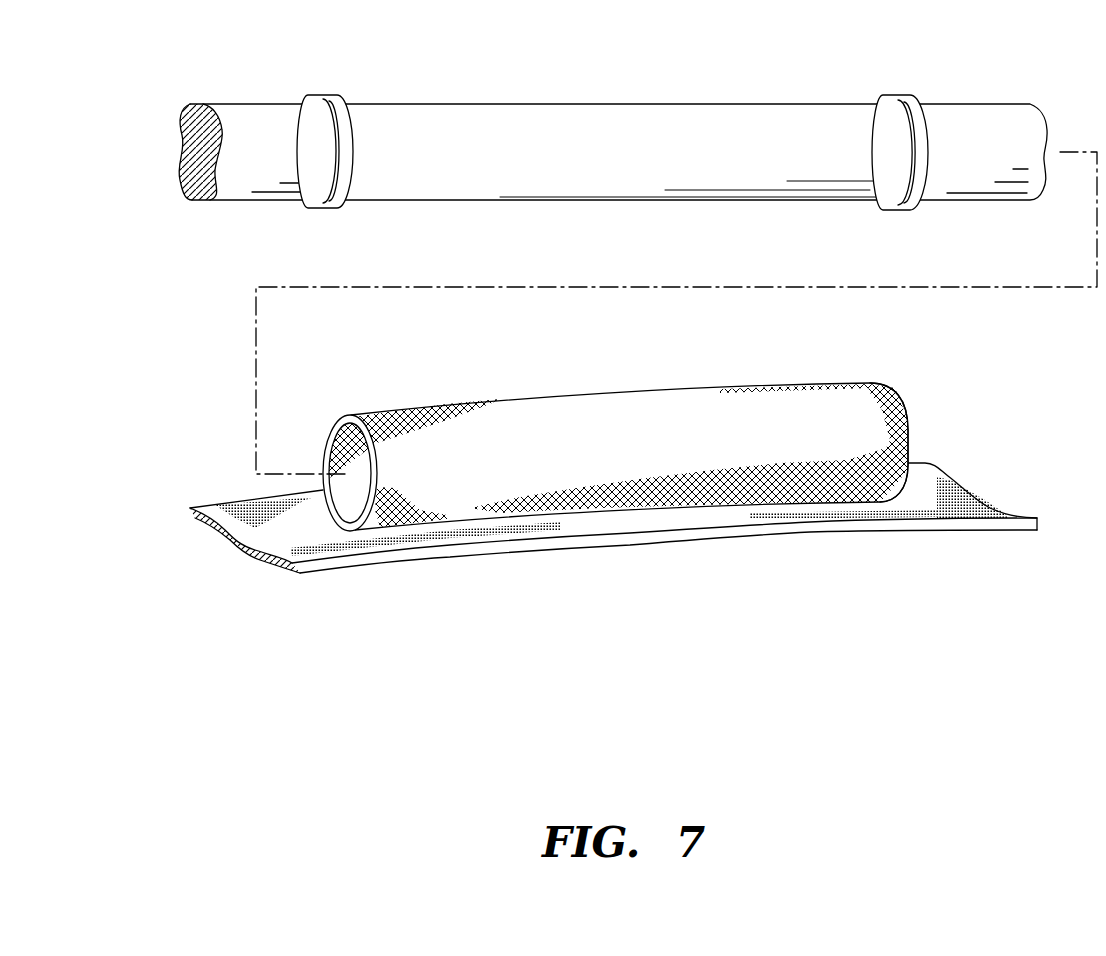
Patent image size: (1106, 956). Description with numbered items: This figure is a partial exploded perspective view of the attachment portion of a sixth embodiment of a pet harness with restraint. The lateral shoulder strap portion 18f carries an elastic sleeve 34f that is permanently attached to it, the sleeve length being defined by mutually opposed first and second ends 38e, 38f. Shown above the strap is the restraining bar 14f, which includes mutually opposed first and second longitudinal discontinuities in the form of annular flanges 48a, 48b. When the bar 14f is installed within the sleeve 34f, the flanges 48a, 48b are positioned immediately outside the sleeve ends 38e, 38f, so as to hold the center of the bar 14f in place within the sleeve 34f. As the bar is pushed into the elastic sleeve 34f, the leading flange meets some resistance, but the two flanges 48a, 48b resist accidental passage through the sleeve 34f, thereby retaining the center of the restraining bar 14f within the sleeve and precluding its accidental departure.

The restraining bar 14f is at (481, 104).
The annular flange 48a is at (318, 95).
The annular flange 48b is at (892, 95).
The elastic sleeve 34f is at (556, 395).
The first end of sleeve 38e is at (333, 437).
The second end of sleeve 38f is at (905, 405).
The lateral shoulder strap portion 18f is at (655, 538).